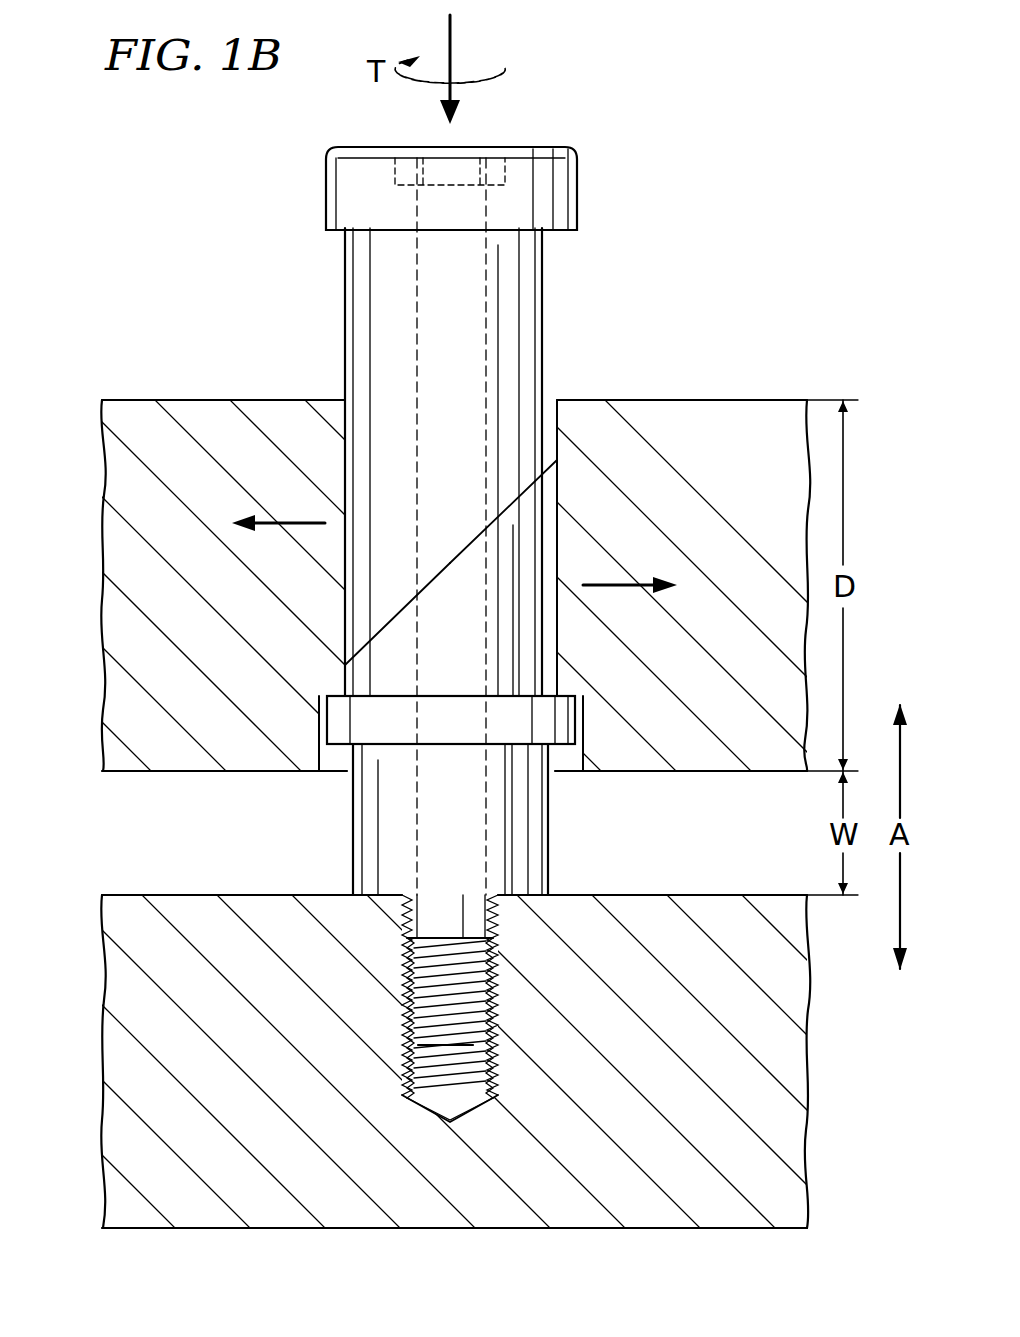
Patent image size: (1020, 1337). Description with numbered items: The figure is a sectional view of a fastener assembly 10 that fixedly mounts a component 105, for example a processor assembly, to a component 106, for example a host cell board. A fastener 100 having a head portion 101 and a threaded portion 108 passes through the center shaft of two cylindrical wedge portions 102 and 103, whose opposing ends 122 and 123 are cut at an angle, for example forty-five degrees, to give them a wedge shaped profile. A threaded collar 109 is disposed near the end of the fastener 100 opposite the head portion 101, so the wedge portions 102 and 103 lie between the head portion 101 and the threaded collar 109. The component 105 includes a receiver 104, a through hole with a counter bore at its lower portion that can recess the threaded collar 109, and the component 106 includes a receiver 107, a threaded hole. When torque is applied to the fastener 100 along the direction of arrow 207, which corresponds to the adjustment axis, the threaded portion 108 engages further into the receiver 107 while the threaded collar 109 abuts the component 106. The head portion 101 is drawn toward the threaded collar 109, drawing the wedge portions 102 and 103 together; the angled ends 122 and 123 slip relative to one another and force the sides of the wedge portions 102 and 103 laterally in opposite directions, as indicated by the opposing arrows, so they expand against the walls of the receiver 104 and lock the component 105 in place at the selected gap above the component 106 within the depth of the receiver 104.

The fastener assembly 10 is at (708, 104).
The fastener 100 is at (435, 328).
The head portion 101 is at (326, 192).
The wedge portion 102 is at (543, 297).
The wedge portion 103 is at (559, 630).
The receiver 104 is at (558, 413).
The component 105 is at (115, 614).
The component 106 is at (116, 1104).
The receiver 107 is at (477, 1080).
The threaded portion 108 is at (412, 1065).
The threaded collar 109 is at (549, 826).
The opposing end 122 is at (345, 670).
The opposing end 123 is at (560, 458).
The arrow 207 is at (453, 34).